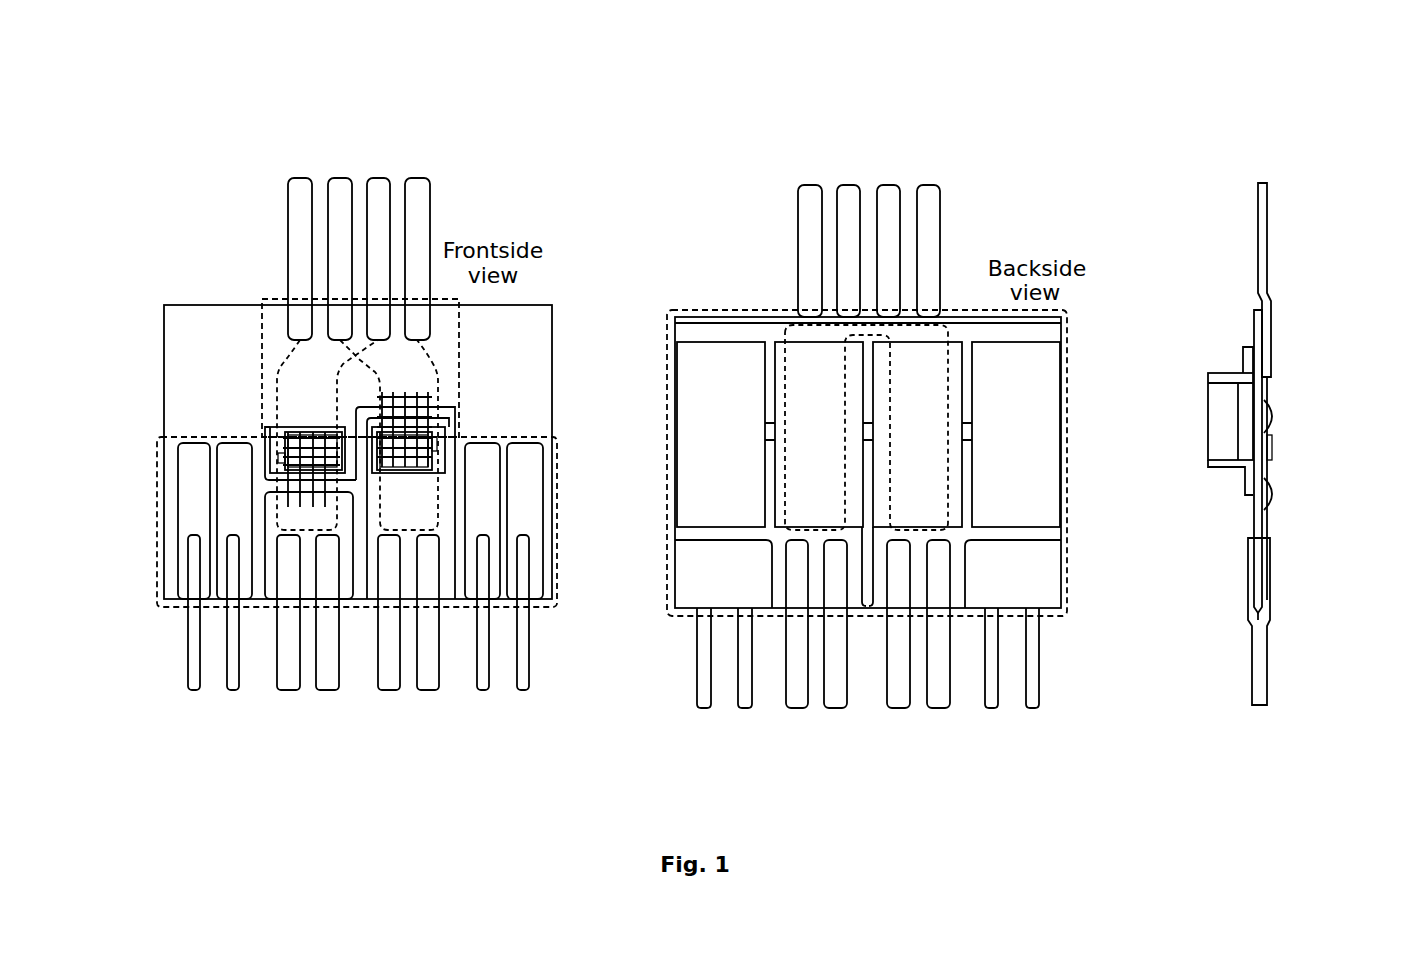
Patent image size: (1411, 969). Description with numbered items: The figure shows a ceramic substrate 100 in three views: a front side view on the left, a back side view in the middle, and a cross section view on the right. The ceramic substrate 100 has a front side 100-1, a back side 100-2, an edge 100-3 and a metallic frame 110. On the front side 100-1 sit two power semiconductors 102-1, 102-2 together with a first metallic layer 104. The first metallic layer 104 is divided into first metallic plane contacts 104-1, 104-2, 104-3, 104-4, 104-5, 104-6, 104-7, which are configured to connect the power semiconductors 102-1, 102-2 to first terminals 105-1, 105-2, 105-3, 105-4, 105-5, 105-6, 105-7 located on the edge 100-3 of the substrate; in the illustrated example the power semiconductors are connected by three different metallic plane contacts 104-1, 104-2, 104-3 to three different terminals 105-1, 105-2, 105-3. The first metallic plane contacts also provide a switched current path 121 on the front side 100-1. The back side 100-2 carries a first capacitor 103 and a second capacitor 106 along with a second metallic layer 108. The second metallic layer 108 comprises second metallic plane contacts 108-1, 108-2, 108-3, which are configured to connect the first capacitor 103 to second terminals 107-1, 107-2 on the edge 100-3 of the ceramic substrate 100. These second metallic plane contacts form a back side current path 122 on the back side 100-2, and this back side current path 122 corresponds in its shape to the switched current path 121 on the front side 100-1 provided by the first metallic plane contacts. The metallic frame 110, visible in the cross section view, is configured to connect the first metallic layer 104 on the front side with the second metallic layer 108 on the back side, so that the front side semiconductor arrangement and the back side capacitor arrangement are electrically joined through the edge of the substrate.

The ceramic substrate 100 is at (220, 156).
The front side 100-1 is at (542, 338).
The back side 100-2 is at (693, 570).
The edge 100-3 is at (246, 296).
The power semiconductor 102-1 is at (290, 430).
The power semiconductor 102-2 is at (435, 430).
The first capacitor 103 is at (803, 407).
The first metallic layer 104 is at (262, 428).
The first metallic plane contact 104-1 is at (442, 345).
The first metallic plane contact 104-2 is at (452, 600).
The first metallic plane contact 104-3 is at (268, 600).
The first metallic plane contact 104-4 is at (487, 452).
The first metallic plane contact 104-5 is at (528, 500).
The first metallic plane contact 104-6 is at (185, 515).
The first metallic plane contact 104-7 is at (230, 460).
The first terminal 105-1 is at (300, 186).
The first terminal 105-2 is at (387, 692).
The first terminal 105-3 is at (285, 690).
The first terminal 105-4 is at (483, 692).
The first terminal 105-5 is at (522, 692).
The first terminal 105-6 is at (193, 690).
The first terminal 105-7 is at (232, 690).
The second capacitor 106 is at (935, 407).
The second terminal 107-1 is at (800, 706).
The second terminal 107-2 is at (898, 706).
The second metallic layer 108 is at (1068, 533).
The second metallic plane contact 108-1 is at (780, 583).
The second metallic plane contact 108-2 is at (957, 580).
The second metallic plane contact 108-3 is at (1047, 330).
The metallic frame 110 is at (1260, 624).
The switched current path 121 is at (280, 367).
The back side current path 122 is at (793, 320).